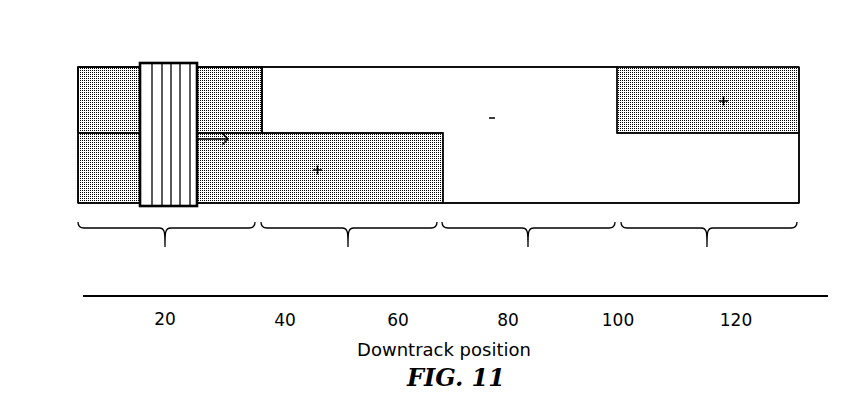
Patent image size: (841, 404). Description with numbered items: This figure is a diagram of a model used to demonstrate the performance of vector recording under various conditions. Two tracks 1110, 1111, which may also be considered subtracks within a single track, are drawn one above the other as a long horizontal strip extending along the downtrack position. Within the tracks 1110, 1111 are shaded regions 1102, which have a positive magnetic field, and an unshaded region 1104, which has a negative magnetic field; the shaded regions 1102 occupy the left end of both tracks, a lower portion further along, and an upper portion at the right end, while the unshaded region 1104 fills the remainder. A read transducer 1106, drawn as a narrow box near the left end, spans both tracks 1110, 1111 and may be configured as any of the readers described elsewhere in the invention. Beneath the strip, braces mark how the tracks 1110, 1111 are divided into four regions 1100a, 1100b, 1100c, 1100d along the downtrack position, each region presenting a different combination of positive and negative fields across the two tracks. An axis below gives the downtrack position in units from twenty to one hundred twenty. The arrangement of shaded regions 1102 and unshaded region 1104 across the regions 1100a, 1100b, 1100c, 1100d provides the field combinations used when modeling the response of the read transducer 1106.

The shaded regions 1102 is at (97, 90).
The unshaded region 1104 is at (427, 88).
The read transducer 1106 is at (182, 70).
The track 1110 is at (82, 99).
The track 1111 is at (82, 175).
The first region 1100a is at (166, 248).
The second region 1100b is at (349, 248).
The third region 1100c is at (528, 248).
The fourth region 1100d is at (709, 248).